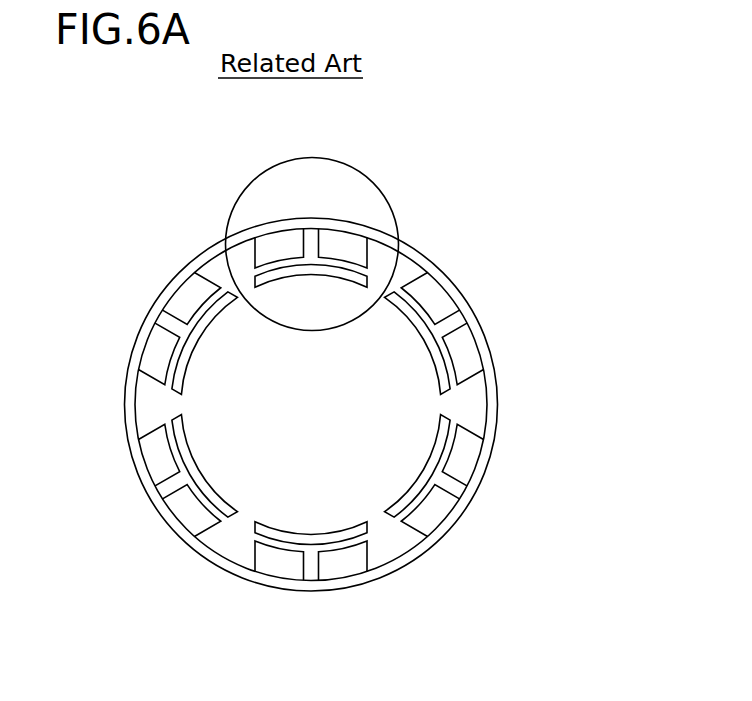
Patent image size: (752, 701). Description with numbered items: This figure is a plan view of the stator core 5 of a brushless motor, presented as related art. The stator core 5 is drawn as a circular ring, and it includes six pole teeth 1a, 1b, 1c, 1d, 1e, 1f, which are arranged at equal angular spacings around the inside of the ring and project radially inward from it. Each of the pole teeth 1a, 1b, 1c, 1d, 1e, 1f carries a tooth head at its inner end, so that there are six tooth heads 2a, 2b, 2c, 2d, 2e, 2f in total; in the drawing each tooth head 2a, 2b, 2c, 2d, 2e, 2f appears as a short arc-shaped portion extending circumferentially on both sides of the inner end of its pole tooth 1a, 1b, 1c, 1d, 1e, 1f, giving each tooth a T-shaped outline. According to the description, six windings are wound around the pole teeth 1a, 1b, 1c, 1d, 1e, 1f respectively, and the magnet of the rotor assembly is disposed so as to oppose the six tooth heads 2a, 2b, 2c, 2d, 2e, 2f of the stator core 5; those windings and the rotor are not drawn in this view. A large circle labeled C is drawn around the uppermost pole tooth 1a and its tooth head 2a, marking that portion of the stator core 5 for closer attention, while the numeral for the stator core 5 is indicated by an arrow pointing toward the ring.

The stator core 5 is at (538, 147).
The enlarged region C is at (272, 205).
The pole tooth 1a is at (314, 236).
The pole tooth 1b is at (452, 323).
The pole tooth 1c is at (447, 487).
The pole tooth 1d is at (312, 561).
The pole tooth 1e is at (175, 485).
The pole tooth 1f is at (170, 323).
The tooth head 2a is at (372, 278).
The tooth head 2b is at (450, 364).
The tooth head 2c is at (400, 515).
The tooth head 2d is at (272, 543).
The tooth head 2e is at (167, 435).
The tooth head 2f is at (213, 298).